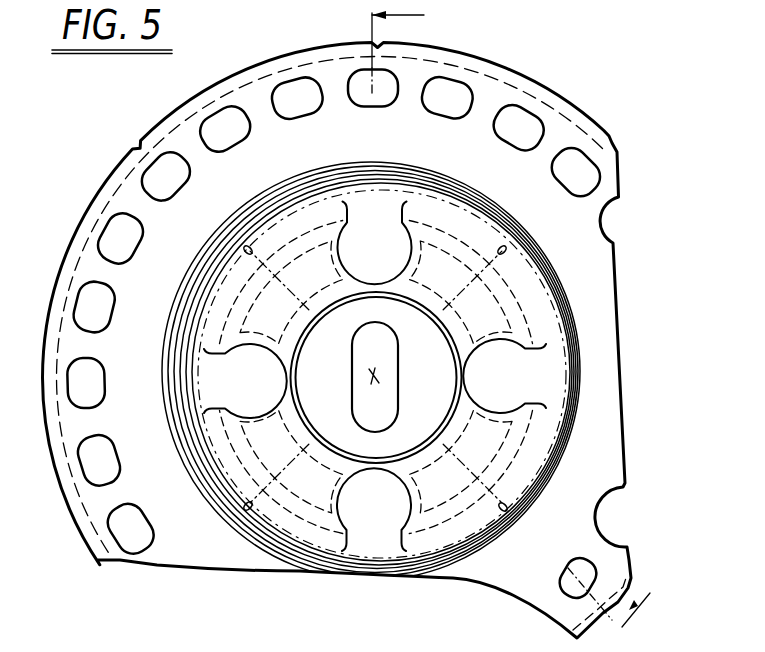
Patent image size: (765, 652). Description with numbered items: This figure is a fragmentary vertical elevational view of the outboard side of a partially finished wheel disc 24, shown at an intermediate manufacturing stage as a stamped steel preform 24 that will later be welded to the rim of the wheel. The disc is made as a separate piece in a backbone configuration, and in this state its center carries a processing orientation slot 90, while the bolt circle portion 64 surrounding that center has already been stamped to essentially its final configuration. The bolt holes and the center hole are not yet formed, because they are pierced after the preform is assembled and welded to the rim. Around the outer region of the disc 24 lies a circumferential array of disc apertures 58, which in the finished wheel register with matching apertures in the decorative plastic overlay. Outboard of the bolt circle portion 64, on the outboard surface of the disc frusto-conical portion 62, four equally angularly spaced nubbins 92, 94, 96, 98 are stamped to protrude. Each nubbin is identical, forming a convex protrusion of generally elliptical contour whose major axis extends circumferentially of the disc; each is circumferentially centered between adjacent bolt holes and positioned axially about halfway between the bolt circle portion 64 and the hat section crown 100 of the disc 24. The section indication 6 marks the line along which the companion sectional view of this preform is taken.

The wheel disc 24 is at (233, 571).
The disc apertures 58 is at (522, 136).
The disc frusto-conical portion 62 is at (340, 186).
The bolt circle portion 64 is at (298, 302).
The processing orientation slot 90 is at (406, 356).
The nubbin 92 is at (249, 247).
The nubbin 94 is at (504, 250).
The nubbin 96 is at (506, 511).
The nubbin 98 is at (247, 508).
The hat section crown 100 is at (200, 270).
The section line 6- 6 is at (513, 313).